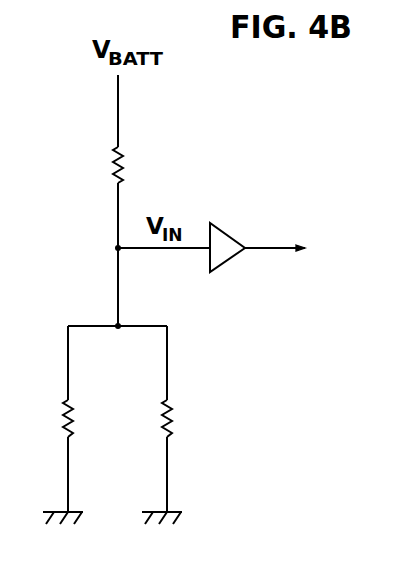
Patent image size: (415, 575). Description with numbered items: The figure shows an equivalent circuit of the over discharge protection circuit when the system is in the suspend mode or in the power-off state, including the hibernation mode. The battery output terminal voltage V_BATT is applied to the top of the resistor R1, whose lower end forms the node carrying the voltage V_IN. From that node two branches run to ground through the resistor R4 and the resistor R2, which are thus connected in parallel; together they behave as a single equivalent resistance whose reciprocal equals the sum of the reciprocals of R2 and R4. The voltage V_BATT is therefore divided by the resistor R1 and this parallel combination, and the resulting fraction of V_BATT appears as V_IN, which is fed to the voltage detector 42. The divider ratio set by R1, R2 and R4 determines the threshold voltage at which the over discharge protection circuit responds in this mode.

The voltage detector 42 is at (229, 235).
The resistor R1 is at (97, 165).
The resistor R2 is at (146, 418).
The resistor R4 is at (47, 418).